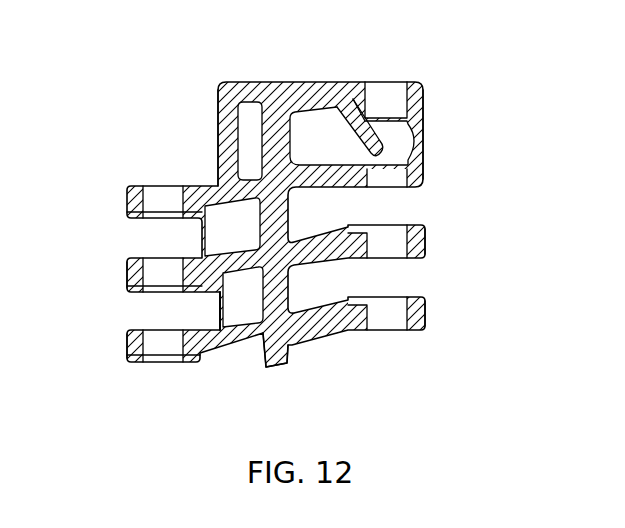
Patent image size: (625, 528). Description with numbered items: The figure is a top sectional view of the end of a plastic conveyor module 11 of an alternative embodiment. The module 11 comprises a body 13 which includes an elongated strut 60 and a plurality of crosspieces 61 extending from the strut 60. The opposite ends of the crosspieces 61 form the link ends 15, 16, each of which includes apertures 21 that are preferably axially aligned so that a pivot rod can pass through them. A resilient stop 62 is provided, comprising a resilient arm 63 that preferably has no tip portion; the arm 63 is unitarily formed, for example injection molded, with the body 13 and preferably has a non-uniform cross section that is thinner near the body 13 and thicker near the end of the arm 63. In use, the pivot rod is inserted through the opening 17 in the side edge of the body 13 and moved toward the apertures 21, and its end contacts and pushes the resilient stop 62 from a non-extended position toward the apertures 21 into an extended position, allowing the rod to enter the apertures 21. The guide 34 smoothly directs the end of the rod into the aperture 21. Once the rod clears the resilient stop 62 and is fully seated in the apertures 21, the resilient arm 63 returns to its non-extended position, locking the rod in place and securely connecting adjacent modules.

The plastic module 11 is at (225, 81).
The body 13 is at (216, 141).
The link end 15 is at (123, 348).
The link end 16 is at (425, 313).
The opening 17 is at (390, 92).
The aperture 21 is at (162, 270).
The guide 34 is at (418, 138).
The elongated strut 60 is at (287, 348).
The crosspiece 61 is at (236, 345).
The resilient stop 62 is at (380, 138).
The resilient arm 63 is at (350, 124).